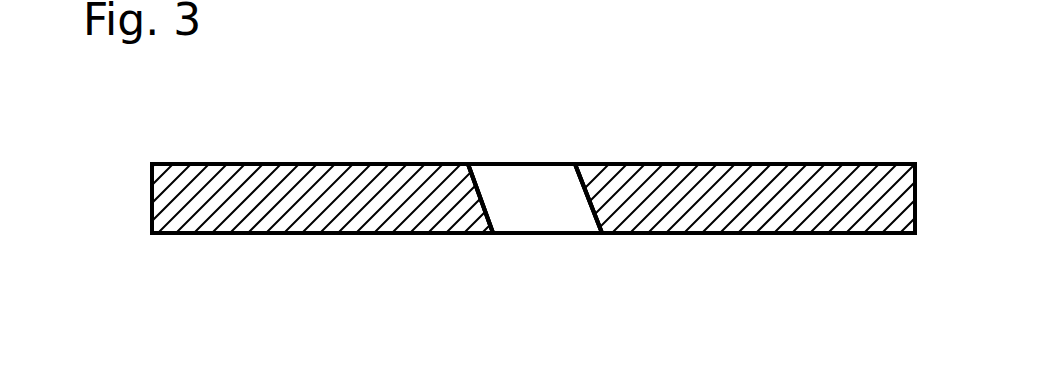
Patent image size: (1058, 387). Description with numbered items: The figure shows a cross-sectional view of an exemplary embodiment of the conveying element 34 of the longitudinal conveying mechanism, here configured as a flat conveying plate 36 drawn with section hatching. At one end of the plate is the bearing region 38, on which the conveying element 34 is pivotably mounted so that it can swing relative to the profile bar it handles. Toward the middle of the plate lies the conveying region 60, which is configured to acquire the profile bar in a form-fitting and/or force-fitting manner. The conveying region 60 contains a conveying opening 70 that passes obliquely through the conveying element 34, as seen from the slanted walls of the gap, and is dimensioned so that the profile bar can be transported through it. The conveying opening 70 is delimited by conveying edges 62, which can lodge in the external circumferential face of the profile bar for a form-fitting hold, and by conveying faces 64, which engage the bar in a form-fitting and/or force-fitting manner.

The conveying element 34 is at (272, 130).
The conveying plate 36 is at (267, 217).
The bearing region 38 is at (912, 165).
The conveying region 60 is at (517, 112).
The conveying edge 62 is at (578, 164).
The conveying face 64 is at (492, 164).
The conveying opening 70 is at (534, 185).